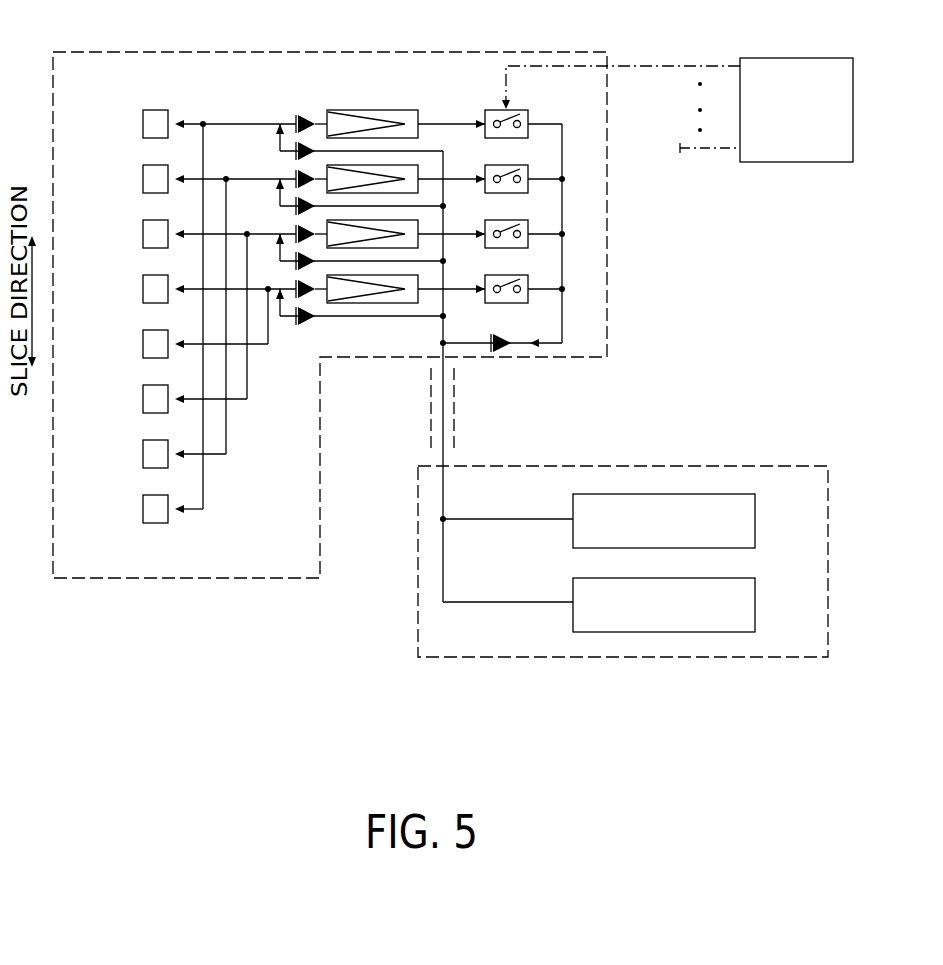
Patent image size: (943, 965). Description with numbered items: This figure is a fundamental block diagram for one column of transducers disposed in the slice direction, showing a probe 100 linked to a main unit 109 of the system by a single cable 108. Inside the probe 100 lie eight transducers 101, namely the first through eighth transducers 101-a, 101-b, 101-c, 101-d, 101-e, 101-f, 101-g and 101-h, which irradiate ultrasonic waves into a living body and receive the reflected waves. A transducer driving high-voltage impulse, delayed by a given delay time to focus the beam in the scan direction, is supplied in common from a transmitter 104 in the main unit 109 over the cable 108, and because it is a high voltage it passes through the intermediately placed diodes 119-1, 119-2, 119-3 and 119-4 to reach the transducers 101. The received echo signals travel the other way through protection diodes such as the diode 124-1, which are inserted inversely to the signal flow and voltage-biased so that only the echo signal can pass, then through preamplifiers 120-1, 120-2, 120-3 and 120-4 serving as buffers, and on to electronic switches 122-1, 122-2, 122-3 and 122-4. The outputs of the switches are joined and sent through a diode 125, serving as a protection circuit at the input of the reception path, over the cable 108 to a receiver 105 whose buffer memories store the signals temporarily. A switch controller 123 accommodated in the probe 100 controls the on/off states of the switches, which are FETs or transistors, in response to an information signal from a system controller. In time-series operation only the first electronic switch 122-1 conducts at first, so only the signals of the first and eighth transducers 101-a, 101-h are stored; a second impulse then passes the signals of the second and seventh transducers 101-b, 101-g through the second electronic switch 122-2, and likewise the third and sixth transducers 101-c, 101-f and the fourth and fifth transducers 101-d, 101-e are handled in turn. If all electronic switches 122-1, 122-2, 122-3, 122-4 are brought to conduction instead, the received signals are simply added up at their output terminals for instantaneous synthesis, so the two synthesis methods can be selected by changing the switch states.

The probe 100 is at (475, 50).
The transducers 101 is at (179, 316).
The first transducer 101-a is at (143, 122).
The second transducer 101-b is at (143, 177).
The third transducer 101-c is at (143, 232).
The fourth transducer 101-d is at (143, 287).
The fifth transducer 101-e is at (143, 342).
The sixth transducer 101-f is at (143, 397).
The seventh transducer 101-g is at (143, 452).
The eighth transducer 101-h is at (143, 507).
The transmitter 104 is at (755, 530).
The receiver 105 is at (755, 610).
The cable 108 is at (454, 427).
The main unit 109 is at (598, 658).
The diode 119-1 is at (300, 156).
The diode 119-2 is at (302, 211).
The diode 119-3 is at (304, 266).
The diode 119-4 is at (310, 325).
The preamplifier 120-1 is at (413, 109).
The preamplifier 120-2 is at (430, 170).
The preamplifier 120-3 is at (430, 225).
The preamplifier 120-4 is at (430, 280).
The first electronic switch 122-1 is at (528, 109).
The second electronic switch 122-2 is at (535, 166).
The third electronic switch 122-3 is at (535, 221).
The fourth electronic switch 122-4 is at (535, 276).
The switch controller 123 is at (815, 163).
The diode 124-1 is at (306, 116).
The diode 125 is at (516, 339).